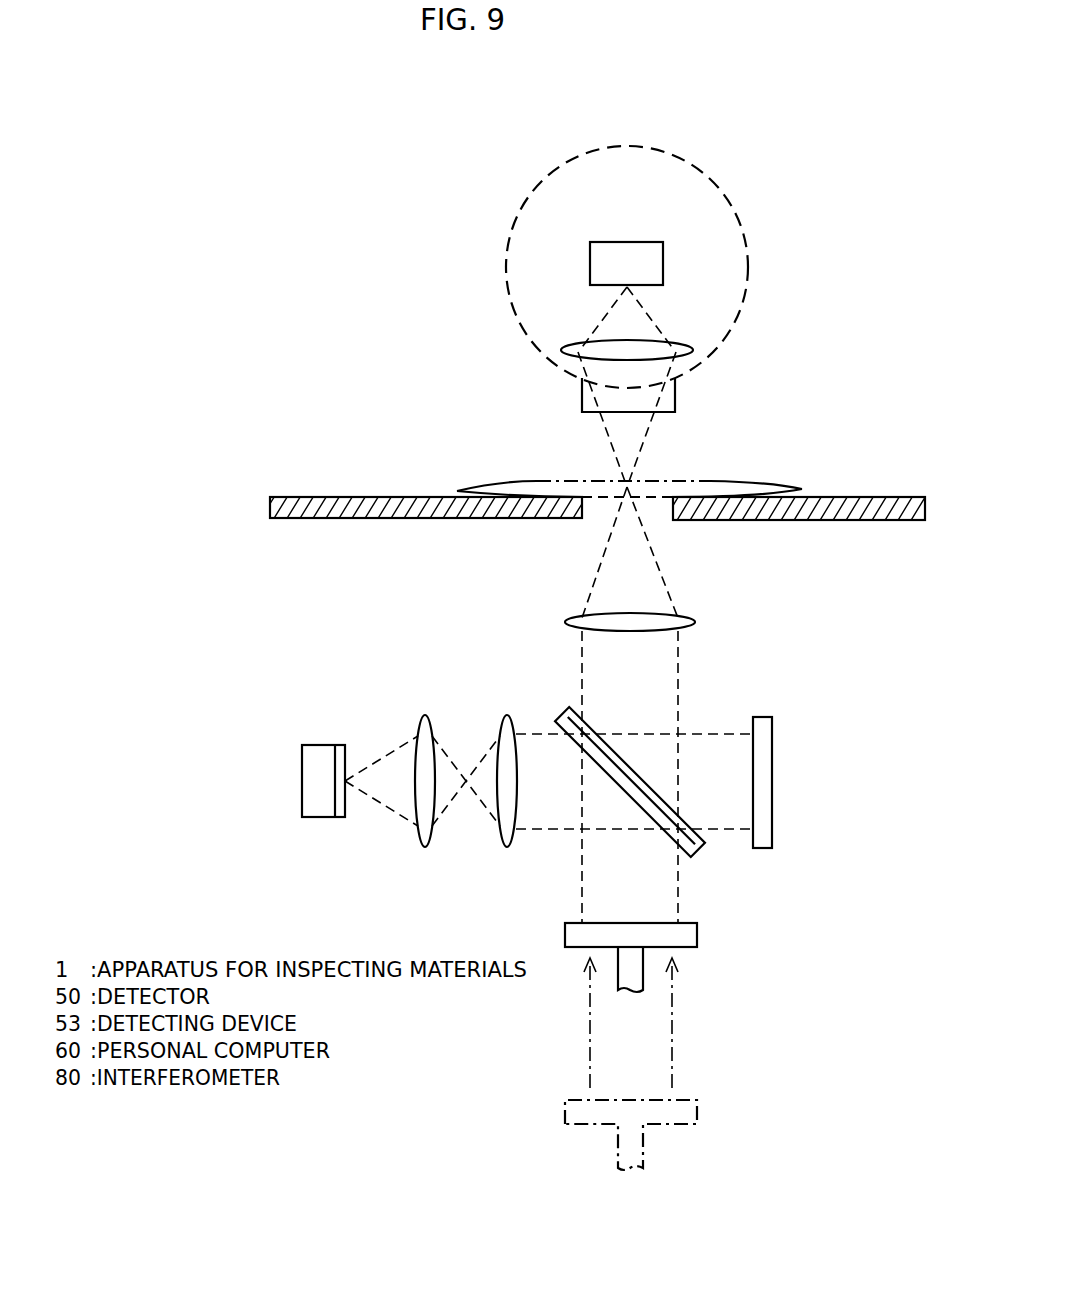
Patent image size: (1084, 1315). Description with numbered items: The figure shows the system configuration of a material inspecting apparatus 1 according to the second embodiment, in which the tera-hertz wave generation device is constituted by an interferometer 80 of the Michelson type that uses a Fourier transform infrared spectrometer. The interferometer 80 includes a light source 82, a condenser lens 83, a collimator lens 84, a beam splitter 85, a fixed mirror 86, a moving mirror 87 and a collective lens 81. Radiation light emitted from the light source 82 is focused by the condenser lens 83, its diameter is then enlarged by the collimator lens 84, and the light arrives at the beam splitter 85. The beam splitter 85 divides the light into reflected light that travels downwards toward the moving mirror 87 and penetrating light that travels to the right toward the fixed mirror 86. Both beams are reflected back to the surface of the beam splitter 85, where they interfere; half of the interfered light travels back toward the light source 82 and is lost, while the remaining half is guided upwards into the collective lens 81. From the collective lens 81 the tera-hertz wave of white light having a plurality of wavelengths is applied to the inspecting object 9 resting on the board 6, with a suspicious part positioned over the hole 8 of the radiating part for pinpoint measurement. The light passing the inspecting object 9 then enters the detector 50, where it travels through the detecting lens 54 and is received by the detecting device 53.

The material inspecting apparatus 1 is at (378, 278).
The detector 50 is at (708, 179).
The detecting device 53 is at (663, 262).
The detecting lens 54 is at (690, 348).
The board 6 is at (364, 497).
The inspecting object 9 is at (745, 483).
The hole 8 is at (668, 518).
The interferometer 80 is at (787, 693).
The collective lens 81 is at (577, 618).
The light source 82 is at (324, 745).
The condenser lens 83 is at (424, 715).
The collimator lens 84 is at (505, 715).
The beam splitter 85 is at (562, 712).
The fixed mirror 86 is at (765, 716).
The moving mirror 87 is at (697, 932).